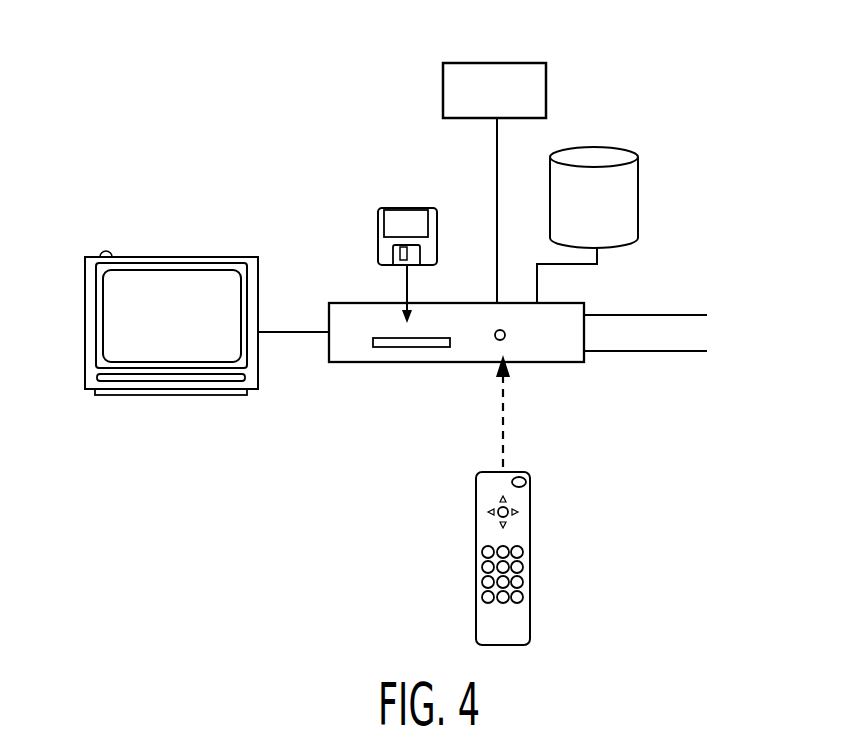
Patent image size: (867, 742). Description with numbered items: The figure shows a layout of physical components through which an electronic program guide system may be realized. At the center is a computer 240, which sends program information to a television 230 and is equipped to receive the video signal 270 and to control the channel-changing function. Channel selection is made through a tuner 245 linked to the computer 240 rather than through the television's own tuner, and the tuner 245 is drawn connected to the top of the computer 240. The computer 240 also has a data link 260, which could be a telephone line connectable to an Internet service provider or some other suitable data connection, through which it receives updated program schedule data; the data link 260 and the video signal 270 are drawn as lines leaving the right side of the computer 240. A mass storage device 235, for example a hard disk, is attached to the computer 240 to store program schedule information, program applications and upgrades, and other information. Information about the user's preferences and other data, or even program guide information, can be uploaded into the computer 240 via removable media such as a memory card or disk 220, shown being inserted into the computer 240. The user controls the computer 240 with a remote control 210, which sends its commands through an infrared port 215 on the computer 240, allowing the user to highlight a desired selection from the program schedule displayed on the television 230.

The remote control 210 is at (531, 503).
The infrared port 215 is at (505, 335).
The memory card or disk 220 is at (375, 242).
The television 230 is at (252, 427).
The mass storage device 235 is at (610, 232).
The computer 240 is at (452, 398).
The tuner 245 is at (502, 63).
The data link 260 is at (785, 330).
The video signal 270 is at (793, 367).